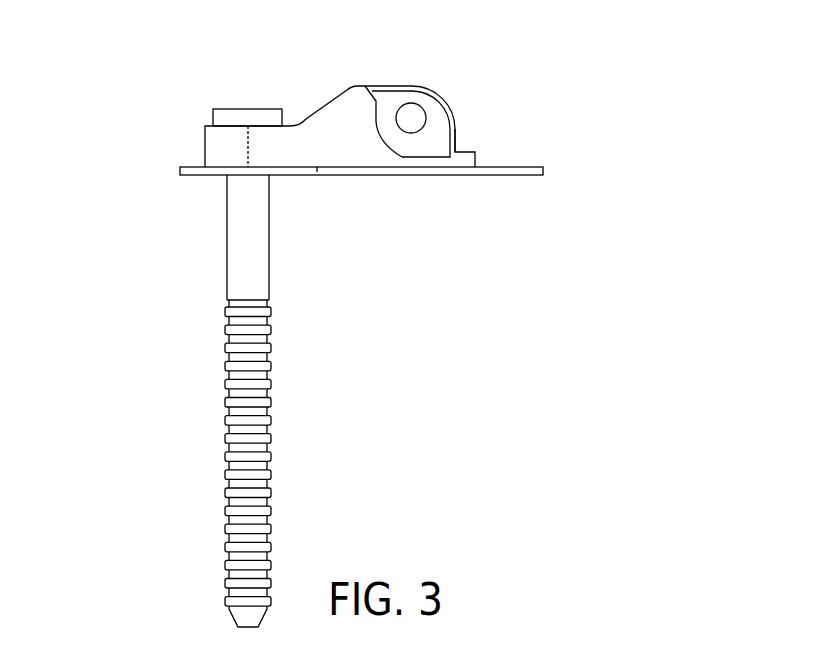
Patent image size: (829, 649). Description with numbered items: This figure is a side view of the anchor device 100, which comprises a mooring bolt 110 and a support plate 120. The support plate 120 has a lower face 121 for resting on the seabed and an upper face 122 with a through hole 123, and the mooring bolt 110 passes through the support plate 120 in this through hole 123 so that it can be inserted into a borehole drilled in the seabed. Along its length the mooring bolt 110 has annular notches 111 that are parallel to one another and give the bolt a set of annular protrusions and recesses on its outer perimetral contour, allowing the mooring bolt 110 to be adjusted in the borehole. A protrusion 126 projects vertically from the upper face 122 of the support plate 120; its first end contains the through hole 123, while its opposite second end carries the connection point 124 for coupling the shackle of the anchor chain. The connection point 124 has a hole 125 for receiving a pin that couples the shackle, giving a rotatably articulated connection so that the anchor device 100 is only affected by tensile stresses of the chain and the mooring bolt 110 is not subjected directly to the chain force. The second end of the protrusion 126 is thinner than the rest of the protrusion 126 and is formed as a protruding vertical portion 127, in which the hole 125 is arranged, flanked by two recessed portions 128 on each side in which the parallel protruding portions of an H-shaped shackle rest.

The anchor device 100 is at (138, 114).
The mooring bolt 110 is at (248, 213).
The annular notches 111 is at (238, 515).
The support plate 120 is at (508, 173).
The lower face 121 is at (328, 178).
The upper face 122 is at (277, 165).
The through hole 123 is at (235, 125).
The connection point 124 is at (428, 104).
The hole 125 is at (413, 121).
The protrusion 126 is at (345, 122).
The protruding vertical portion 127 is at (432, 124).
The recessed portions 128 is at (378, 132).